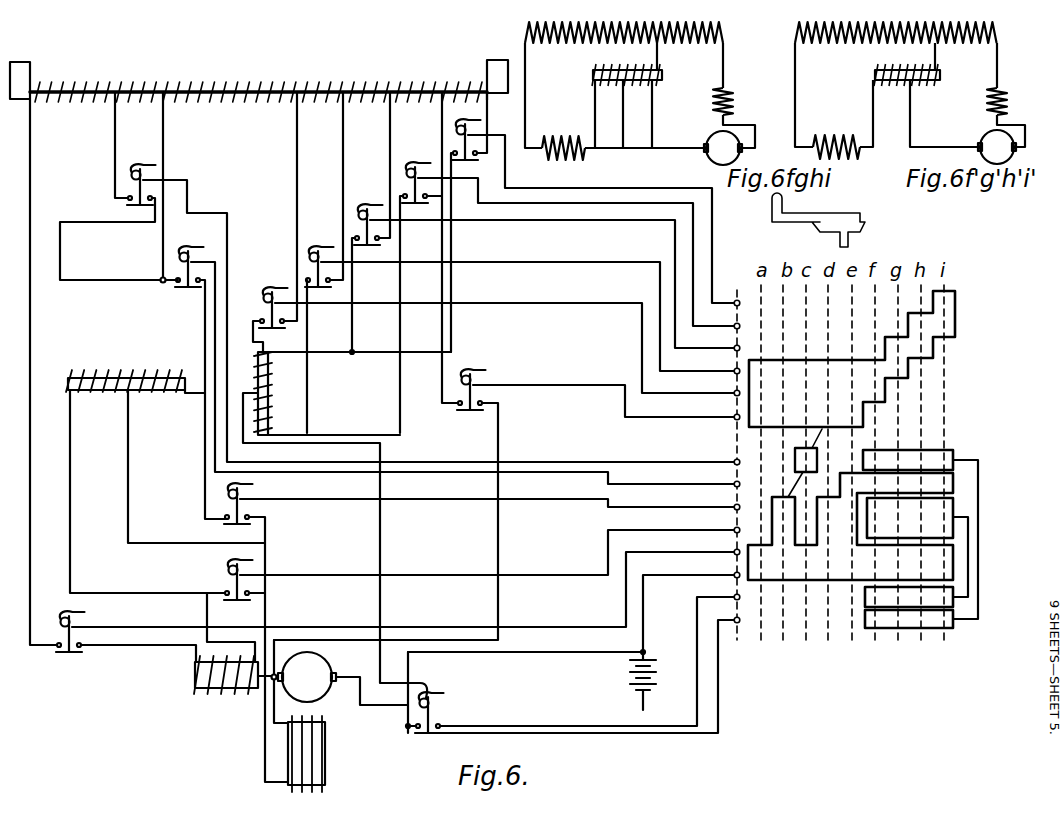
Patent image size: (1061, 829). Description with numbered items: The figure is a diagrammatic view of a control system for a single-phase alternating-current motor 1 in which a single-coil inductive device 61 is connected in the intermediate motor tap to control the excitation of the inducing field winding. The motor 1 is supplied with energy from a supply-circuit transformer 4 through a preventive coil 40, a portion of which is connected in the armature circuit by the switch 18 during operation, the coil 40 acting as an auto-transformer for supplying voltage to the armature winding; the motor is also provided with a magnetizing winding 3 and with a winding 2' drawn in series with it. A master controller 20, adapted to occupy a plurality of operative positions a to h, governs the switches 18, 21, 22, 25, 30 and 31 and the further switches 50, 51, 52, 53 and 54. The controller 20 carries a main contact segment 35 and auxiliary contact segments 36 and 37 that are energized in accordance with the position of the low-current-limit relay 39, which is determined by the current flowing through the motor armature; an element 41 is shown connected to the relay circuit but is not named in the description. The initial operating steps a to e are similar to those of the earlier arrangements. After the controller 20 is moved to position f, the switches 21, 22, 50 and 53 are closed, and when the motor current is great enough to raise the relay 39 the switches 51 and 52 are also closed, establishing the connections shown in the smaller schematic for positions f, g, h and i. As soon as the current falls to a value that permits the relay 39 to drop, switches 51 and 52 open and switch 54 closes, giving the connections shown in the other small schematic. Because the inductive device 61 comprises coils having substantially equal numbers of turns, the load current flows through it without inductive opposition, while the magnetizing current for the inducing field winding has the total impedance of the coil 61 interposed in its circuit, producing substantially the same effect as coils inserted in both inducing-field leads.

In FIG. 6, the motor 1 is at (340, 686).
In FIG. 6fghi, the motor 1 is at (723, 148).
In FIG. 6f'g'h'i', the motor 1 is at (997, 147).
In FIG. 6, the resistance coil 2' is at (234, 693).
In FIG. 6fghi, the resistance coil 2' is at (563, 161).
In FIG. 6f'g'h'i', the resistance coil 2' is at (836, 135).
In FIG. 6, the magnetizing winding 3 is at (327, 748).
In FIG. 6fghi, the magnetizing winding 3 is at (738, 100).
In FIG. 6f'g'h'i', the magnetizing winding 3 is at (1010, 100).
In FIG. 6, the supply-circuit transformer 4 is at (487, 63).
In FIG. 6, the switch 18 is at (478, 375).
In FIG. 6, the master controller 20 is at (876, 462).
In FIG. 6, the switch 21 is at (272, 289).
In FIG. 6, the switch 22 is at (519, 325).
In FIG. 6, the switch 25 is at (544, 265).
In FIG. 6, the switch 30 is at (568, 285).
In FIG. 6, the switch 31 is at (588, 231).
In FIG. 6, the main contact segment 35 is at (955, 328).
In FIG. 6, the auxiliary contact segment 36 is at (856, 598).
In FIG. 6, the auxiliary contact segment 37 is at (950, 446).
In FIG. 6, the low-current-limit relay 39 is at (436, 700).
In FIG. 6, the preventive coil 40 is at (269, 400).
In FIG. 6, the battery 41 is at (628, 683).
In FIG. 6, the switch 50 is at (386, 607).
In FIG. 6, the switch 51 is at (470, 596).
In FIG. 6, the switch 52 is at (248, 488).
In FIG. 6, the switch 53 is at (193, 258).
In FIG. 6, the switch 54 is at (141, 170).
In FIG. 6, the single-coil inductive device 61 is at (137, 366).
In FIG. 6fghi, the single-coil inductive device 61 is at (590, 78).
In FIG. 6f'g'h'i', the single-coil inductive device 61 is at (873, 78).